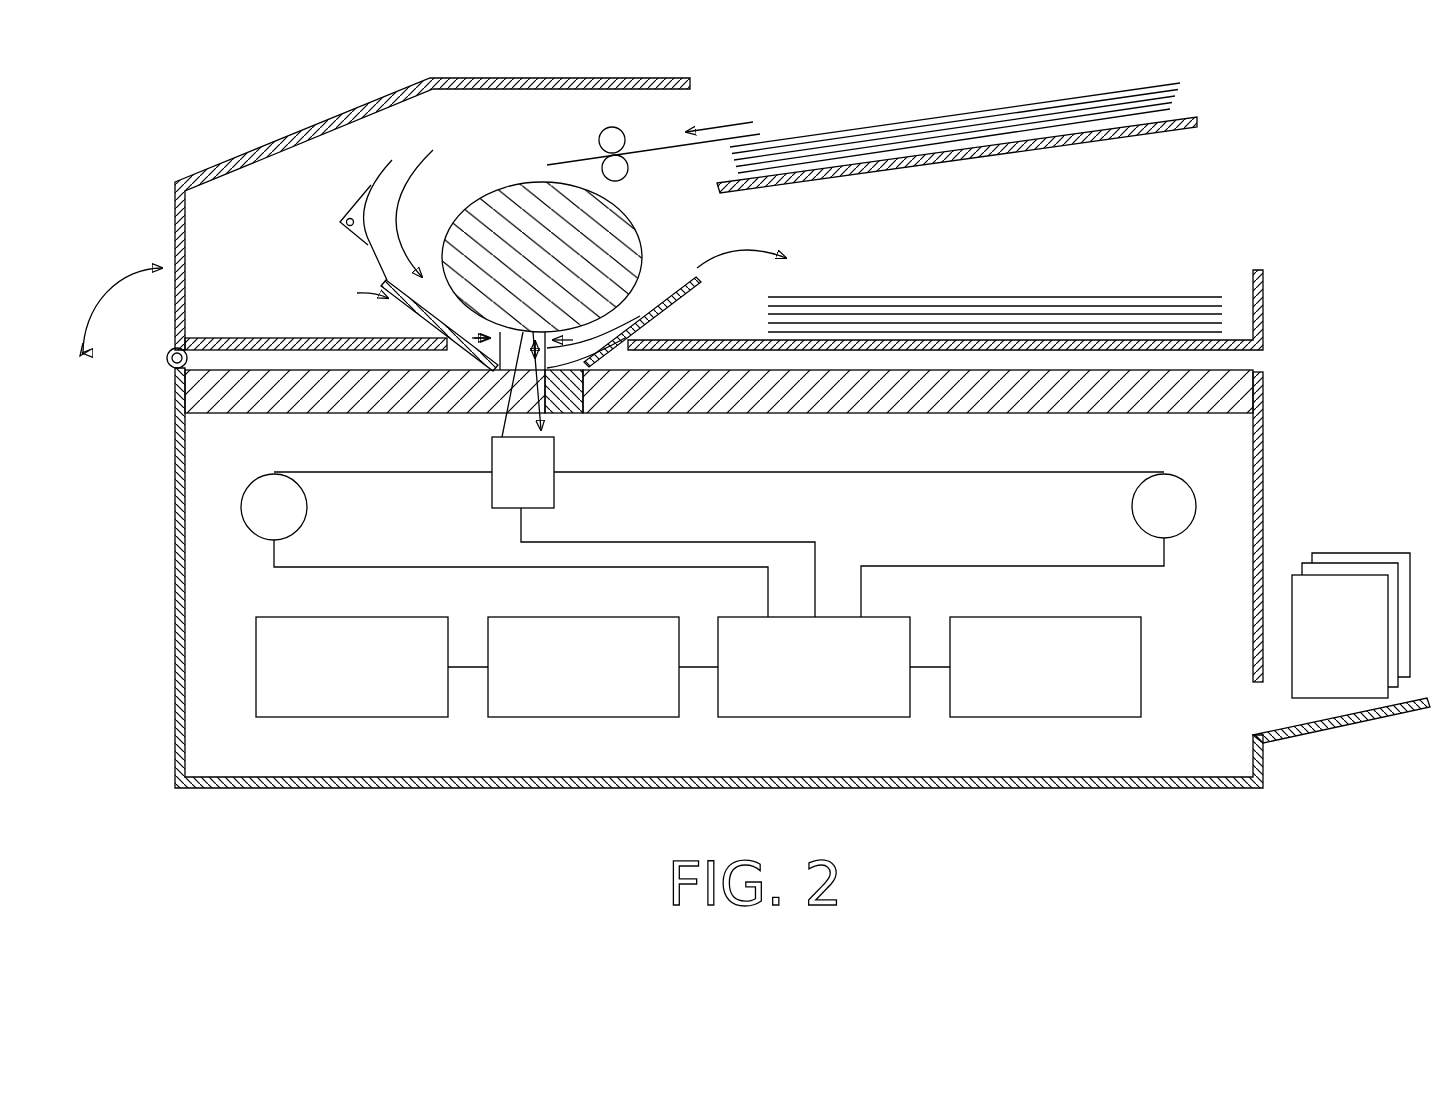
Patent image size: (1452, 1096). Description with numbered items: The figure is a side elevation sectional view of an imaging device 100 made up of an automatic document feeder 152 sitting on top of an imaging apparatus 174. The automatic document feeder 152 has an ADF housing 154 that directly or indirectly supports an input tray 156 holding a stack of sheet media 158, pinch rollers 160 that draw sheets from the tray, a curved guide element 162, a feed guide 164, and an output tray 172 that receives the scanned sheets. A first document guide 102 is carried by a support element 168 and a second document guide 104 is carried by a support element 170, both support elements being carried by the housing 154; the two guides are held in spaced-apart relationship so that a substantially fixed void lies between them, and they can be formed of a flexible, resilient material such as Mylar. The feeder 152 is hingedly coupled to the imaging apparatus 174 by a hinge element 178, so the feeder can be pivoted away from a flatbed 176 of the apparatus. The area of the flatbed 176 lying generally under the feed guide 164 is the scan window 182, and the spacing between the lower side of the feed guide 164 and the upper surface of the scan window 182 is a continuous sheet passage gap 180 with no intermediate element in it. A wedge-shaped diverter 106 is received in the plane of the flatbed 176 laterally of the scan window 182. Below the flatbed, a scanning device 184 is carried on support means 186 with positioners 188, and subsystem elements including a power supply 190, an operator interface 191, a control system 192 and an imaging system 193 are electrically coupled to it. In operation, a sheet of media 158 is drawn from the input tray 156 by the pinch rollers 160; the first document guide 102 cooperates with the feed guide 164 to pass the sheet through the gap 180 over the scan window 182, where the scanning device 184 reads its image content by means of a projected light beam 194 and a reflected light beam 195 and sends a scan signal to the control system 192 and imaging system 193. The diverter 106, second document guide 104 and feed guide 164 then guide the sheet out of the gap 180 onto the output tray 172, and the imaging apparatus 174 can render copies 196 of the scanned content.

The imaging device 100 is at (1167, 812).
The first document guide 102 is at (393, 277).
The second document guide 104 is at (676, 290).
The diverter 106 is at (574, 398).
The automatic document feeder 152 is at (1176, 236).
The ADF housing 154 is at (653, 83).
The input tray 156 is at (1200, 120).
The sheet media 158 is at (910, 112).
The pinch rollers 160 is at (623, 142).
The curved guide element 162 is at (353, 212).
The feed guide 164 is at (510, 193).
The support element 168 is at (346, 292).
The support element 170 is at (692, 297).
The output tray 172 is at (1265, 296).
The imaging apparatus 174 is at (1304, 496).
The flatbed 176 is at (340, 405).
The hinge element 178 is at (167, 360).
The sheet passage gap 180 is at (650, 318).
The scan window 182 is at (474, 338).
The scanning device 184 is at (494, 490).
The support means 186 is at (931, 474).
The positioners 188 is at (296, 507).
The power supply 190 is at (334, 717).
The operator interface 191 is at (563, 717).
The control system 192 is at (795, 718).
The imaging system 193 is at (1026, 718).
The projected light beam 194 is at (498, 424).
The reflected light beam 195 is at (560, 422).
The copies 196 is at (1370, 558).